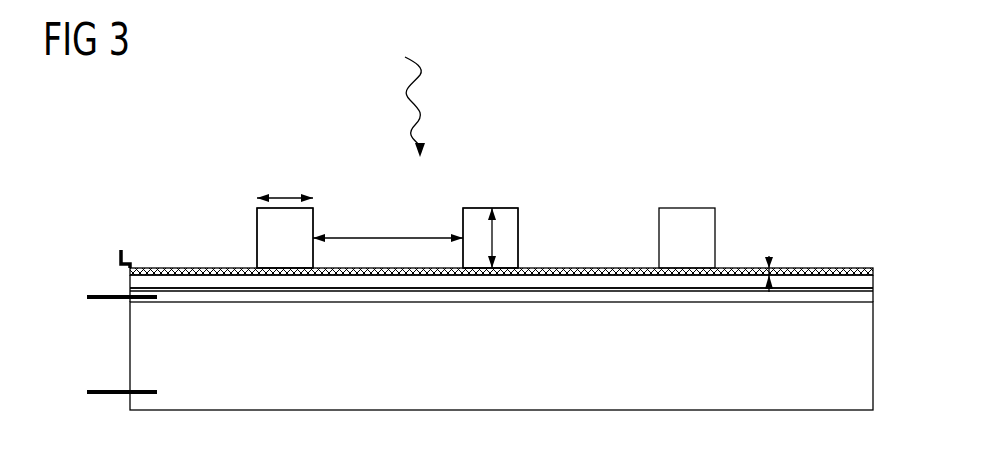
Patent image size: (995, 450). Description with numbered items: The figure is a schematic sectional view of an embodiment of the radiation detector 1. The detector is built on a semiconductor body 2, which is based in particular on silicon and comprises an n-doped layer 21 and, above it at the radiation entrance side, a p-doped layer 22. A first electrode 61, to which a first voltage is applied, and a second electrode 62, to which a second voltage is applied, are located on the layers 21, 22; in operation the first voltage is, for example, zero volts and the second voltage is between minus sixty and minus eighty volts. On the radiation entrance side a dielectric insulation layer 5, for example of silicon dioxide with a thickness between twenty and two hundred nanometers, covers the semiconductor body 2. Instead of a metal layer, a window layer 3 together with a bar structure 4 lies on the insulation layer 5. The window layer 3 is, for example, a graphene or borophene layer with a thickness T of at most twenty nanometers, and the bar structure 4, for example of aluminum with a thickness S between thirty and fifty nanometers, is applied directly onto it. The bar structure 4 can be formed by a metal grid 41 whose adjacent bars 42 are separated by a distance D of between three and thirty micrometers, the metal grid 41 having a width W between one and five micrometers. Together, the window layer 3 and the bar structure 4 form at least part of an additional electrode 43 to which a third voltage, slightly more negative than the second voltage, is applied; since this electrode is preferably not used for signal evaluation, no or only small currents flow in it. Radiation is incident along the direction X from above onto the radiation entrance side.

The radiation detector 1 is at (868, 176).
The semiconductor body 2 is at (548, 342).
The n-doped layer 21 is at (865, 363).
The p-doped layer 22 is at (530, 293).
The window layer 3 is at (852, 272).
The bar structure 4 is at (688, 215).
The metal grid 41 is at (285, 238).
The bars 42 is at (490, 238).
The additional electrode 43 is at (143, 224).
The dielectric insulation layer 5 is at (867, 281).
The first electrode 61 is at (98, 390).
The second electrode 62 is at (98, 295).
The width of the metal grid W is at (284, 196).
The distance between adjacent bars D is at (388, 236).
The thickness of the bar structure S is at (497, 240).
The thickness of the window layer T is at (769, 256).
The direction X is at (421, 103).